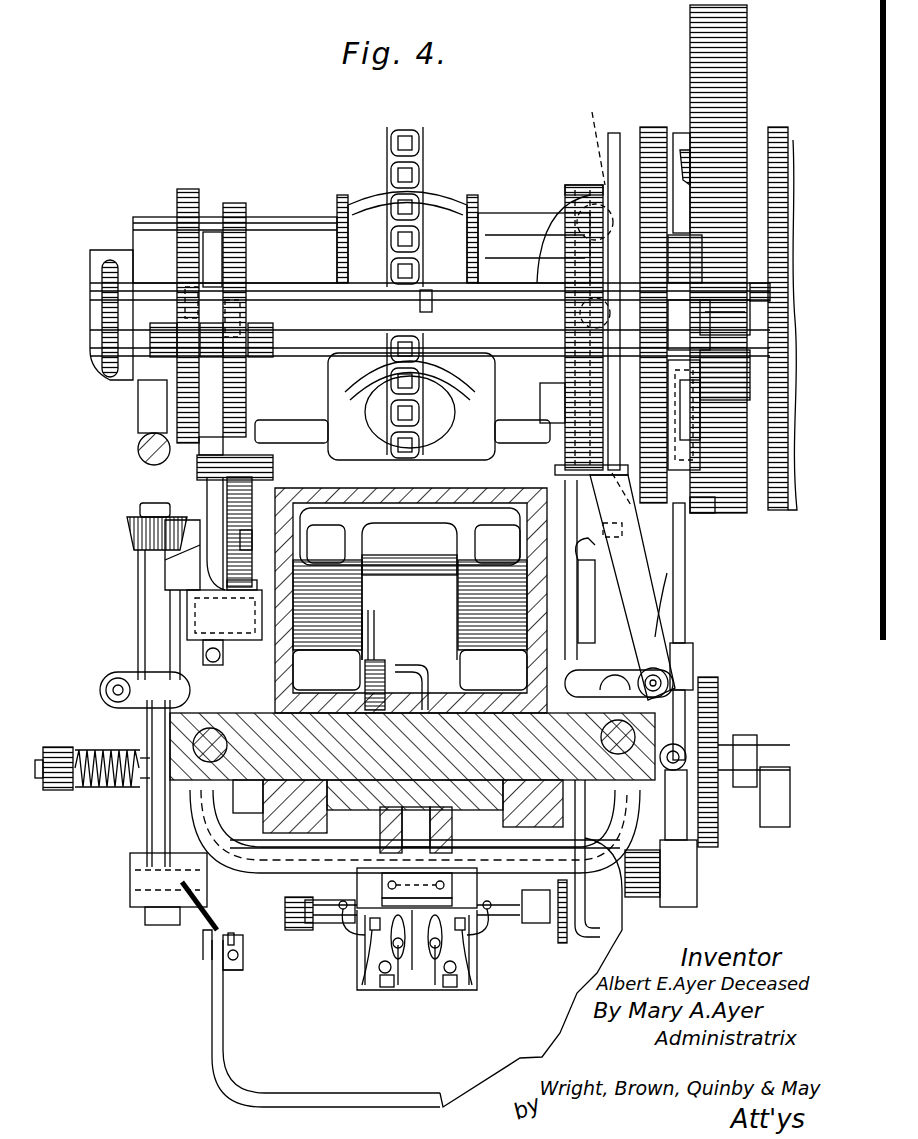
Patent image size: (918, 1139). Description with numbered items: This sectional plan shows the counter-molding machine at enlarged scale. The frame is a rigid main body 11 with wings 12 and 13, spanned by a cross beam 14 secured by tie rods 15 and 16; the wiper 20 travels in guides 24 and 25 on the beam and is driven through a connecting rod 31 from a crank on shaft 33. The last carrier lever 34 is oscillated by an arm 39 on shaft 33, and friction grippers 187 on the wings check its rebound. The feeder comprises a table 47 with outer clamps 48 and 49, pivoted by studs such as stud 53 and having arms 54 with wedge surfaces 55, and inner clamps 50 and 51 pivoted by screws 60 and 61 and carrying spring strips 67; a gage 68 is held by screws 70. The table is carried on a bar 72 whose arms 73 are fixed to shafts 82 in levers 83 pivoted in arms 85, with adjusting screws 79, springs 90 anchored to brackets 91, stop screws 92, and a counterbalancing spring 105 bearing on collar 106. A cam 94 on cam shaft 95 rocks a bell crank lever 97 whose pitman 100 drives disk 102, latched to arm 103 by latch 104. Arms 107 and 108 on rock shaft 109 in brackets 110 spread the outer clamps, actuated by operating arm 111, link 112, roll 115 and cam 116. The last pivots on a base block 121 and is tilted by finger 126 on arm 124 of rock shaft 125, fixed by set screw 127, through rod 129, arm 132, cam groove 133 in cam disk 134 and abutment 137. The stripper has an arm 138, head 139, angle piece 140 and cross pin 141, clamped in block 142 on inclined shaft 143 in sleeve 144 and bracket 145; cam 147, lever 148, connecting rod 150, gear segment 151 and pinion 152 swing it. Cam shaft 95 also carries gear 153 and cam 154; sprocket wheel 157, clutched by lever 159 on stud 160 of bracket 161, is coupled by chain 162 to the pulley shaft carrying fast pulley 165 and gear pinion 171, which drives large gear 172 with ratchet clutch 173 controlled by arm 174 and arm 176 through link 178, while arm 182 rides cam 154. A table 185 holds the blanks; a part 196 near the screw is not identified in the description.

The main body 11 is at (440, 497).
The wing 12 is at (296, 622).
The wing 13 is at (527, 618).
The cross beam 14 is at (248, 796).
The tie rod 15 is at (165, 735).
The tie rod 16 is at (618, 665).
The wiper 20 is at (375, 818).
The guide 24 is at (281, 810).
The guide 25 is at (505, 815).
The connecting rod 31 is at (148, 423).
The shaft 33 is at (757, 283).
The lever 34 is at (400, 610).
The arm 39 is at (440, 428).
The feed table 47 is at (416, 975).
The outer clamp 48 is at (372, 960).
The outer clamp 49 is at (458, 960).
The inner clamp 50 is at (397, 965).
The inner clamp 51 is at (428, 950).
The stud 53 is at (383, 975).
The arm 54 is at (372, 950).
The wedge surface 55 is at (340, 912).
The screw 60 is at (395, 938).
The screw 61 is at (438, 938).
The spring strip 67 is at (412, 945).
The gage 68 is at (429, 892).
The screw 70 is at (447, 880).
The bar 72 is at (330, 900).
The arm 73 is at (195, 797).
The adjusting screw 79 is at (590, 613).
The shaft 82 is at (106, 790).
The lever 83 is at (695, 835).
The arm 85 is at (640, 880).
The spring 90 is at (108, 696).
The bracket 91 is at (106, 688).
The stop screw 92 is at (690, 755).
The cam 94 is at (592, 185).
The cam shaft 95 is at (425, 292).
The bell crank lever 97 is at (626, 420).
The pitman 100 is at (685, 592).
The disk 102 is at (712, 735).
The arm 103 is at (747, 762).
The latch 104 is at (718, 812).
The spring 105 is at (86, 787).
The collar 106 is at (53, 792).
The arm 107 is at (352, 930).
The arm 108 is at (490, 940).
The rock shaft 109 is at (325, 925).
The bracket 110 is at (298, 930).
The operating arm 111 is at (568, 943).
The link 112 is at (586, 885).
The roll 115 is at (552, 400).
The cam 116 is at (578, 215).
The base block 121 is at (465, 695).
The arm 124 is at (383, 665).
The rock shaft 125 is at (315, 685).
The finger 126 is at (440, 690).
The set screw 127 is at (372, 650).
The rod 129 is at (250, 505).
The arm 132 is at (193, 443).
The cam groove 133 is at (245, 300).
The cam disk 134 is at (237, 205).
The adjustable abutment 137 is at (252, 585).
The arm 138 is at (200, 905).
The head 139 is at (236, 972).
The angle piece 140 is at (205, 938).
The cross pin 141 is at (234, 935).
The block 142 is at (130, 882).
The inclined shaft 143 is at (160, 830).
The bearing sleeve 144 is at (140, 580).
The bracket 145 is at (240, 600).
The cam 147 is at (192, 192).
The lever 148 is at (215, 515).
The connecting rod 150 is at (205, 655).
The gear segment 151 is at (178, 565).
The pinion 152 is at (130, 528).
The gear 153 is at (652, 130).
The cam 154 is at (695, 245).
The sprocket wheel 157 is at (410, 130).
The lever 159 is at (662, 599).
The stud 160 is at (580, 200).
The bracket 161 is at (553, 240).
The chain 162 is at (430, 195).
The fast pulley 165 is at (780, 512).
The gear pinion 171 is at (740, 332).
The large gear 172 is at (692, 30).
The ratchet clutch 173 is at (680, 150).
The arm 174 is at (590, 138).
The arm 176 is at (633, 508).
The link 178 is at (592, 542).
The arm 182 is at (710, 415).
The table 185 is at (245, 1053).
The friction gripper 187 is at (333, 540).
The nut 196 is at (248, 543).